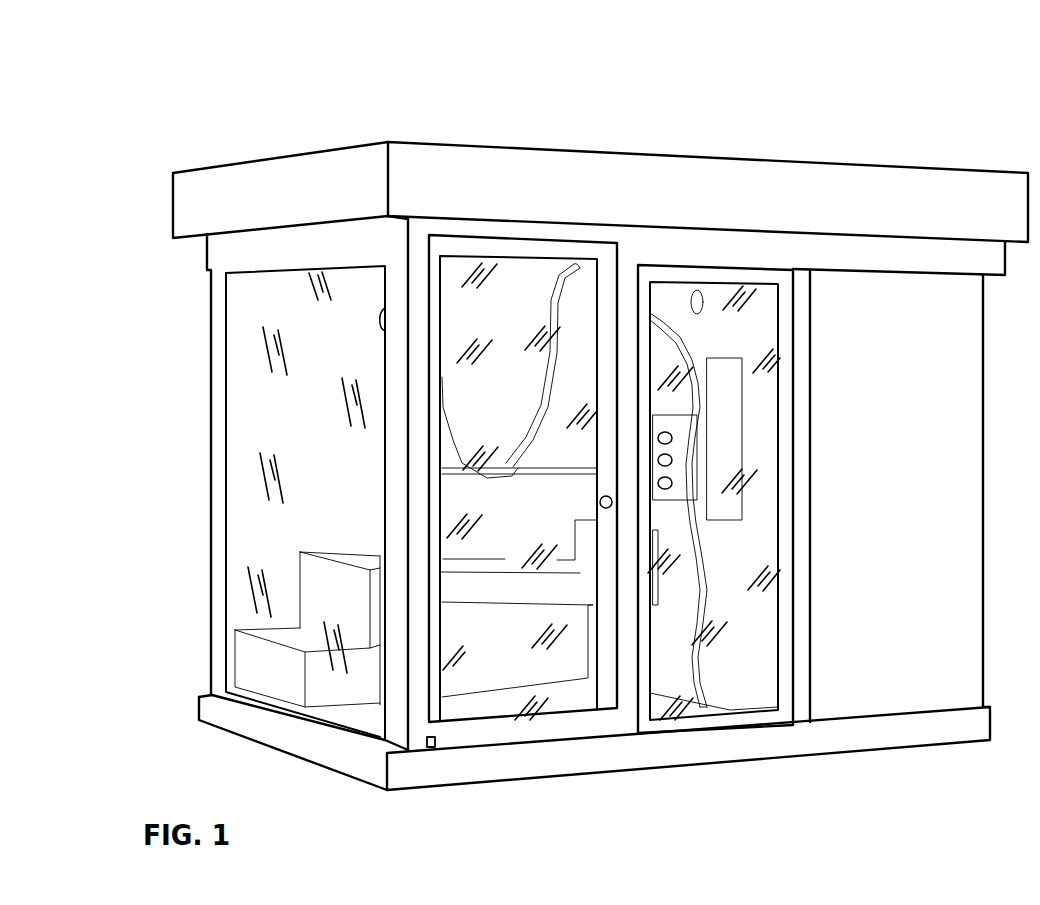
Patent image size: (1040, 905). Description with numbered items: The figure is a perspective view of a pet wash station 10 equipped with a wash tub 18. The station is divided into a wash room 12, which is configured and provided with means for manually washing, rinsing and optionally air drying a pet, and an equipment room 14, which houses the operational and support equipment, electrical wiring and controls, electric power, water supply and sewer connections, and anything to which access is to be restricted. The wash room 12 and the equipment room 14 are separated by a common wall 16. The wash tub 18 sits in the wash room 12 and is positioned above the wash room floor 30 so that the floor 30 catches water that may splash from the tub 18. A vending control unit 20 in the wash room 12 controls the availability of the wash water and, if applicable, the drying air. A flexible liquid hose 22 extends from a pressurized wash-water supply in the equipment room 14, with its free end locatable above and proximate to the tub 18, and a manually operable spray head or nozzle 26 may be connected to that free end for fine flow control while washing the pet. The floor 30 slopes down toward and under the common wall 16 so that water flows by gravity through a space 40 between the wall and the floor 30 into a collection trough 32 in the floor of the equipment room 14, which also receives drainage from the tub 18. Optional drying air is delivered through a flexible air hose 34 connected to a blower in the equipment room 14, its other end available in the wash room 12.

The pet wash station 10 is at (880, 62).
The wash room 12 is at (528, 298).
The equipment room 14 is at (880, 500).
The common wall 16 is at (720, 573).
The wash tub 18 is at (507, 565).
The vending control unit 20 is at (668, 500).
The flexible liquid hose 22 is at (553, 383).
The spray head or nozzle 26 is at (383, 320).
The wash room floor 30 is at (483, 708).
The collection trough 32 is at (695, 712).
The flexible air hose 34 is at (706, 655).
The space 40 is at (717, 707).